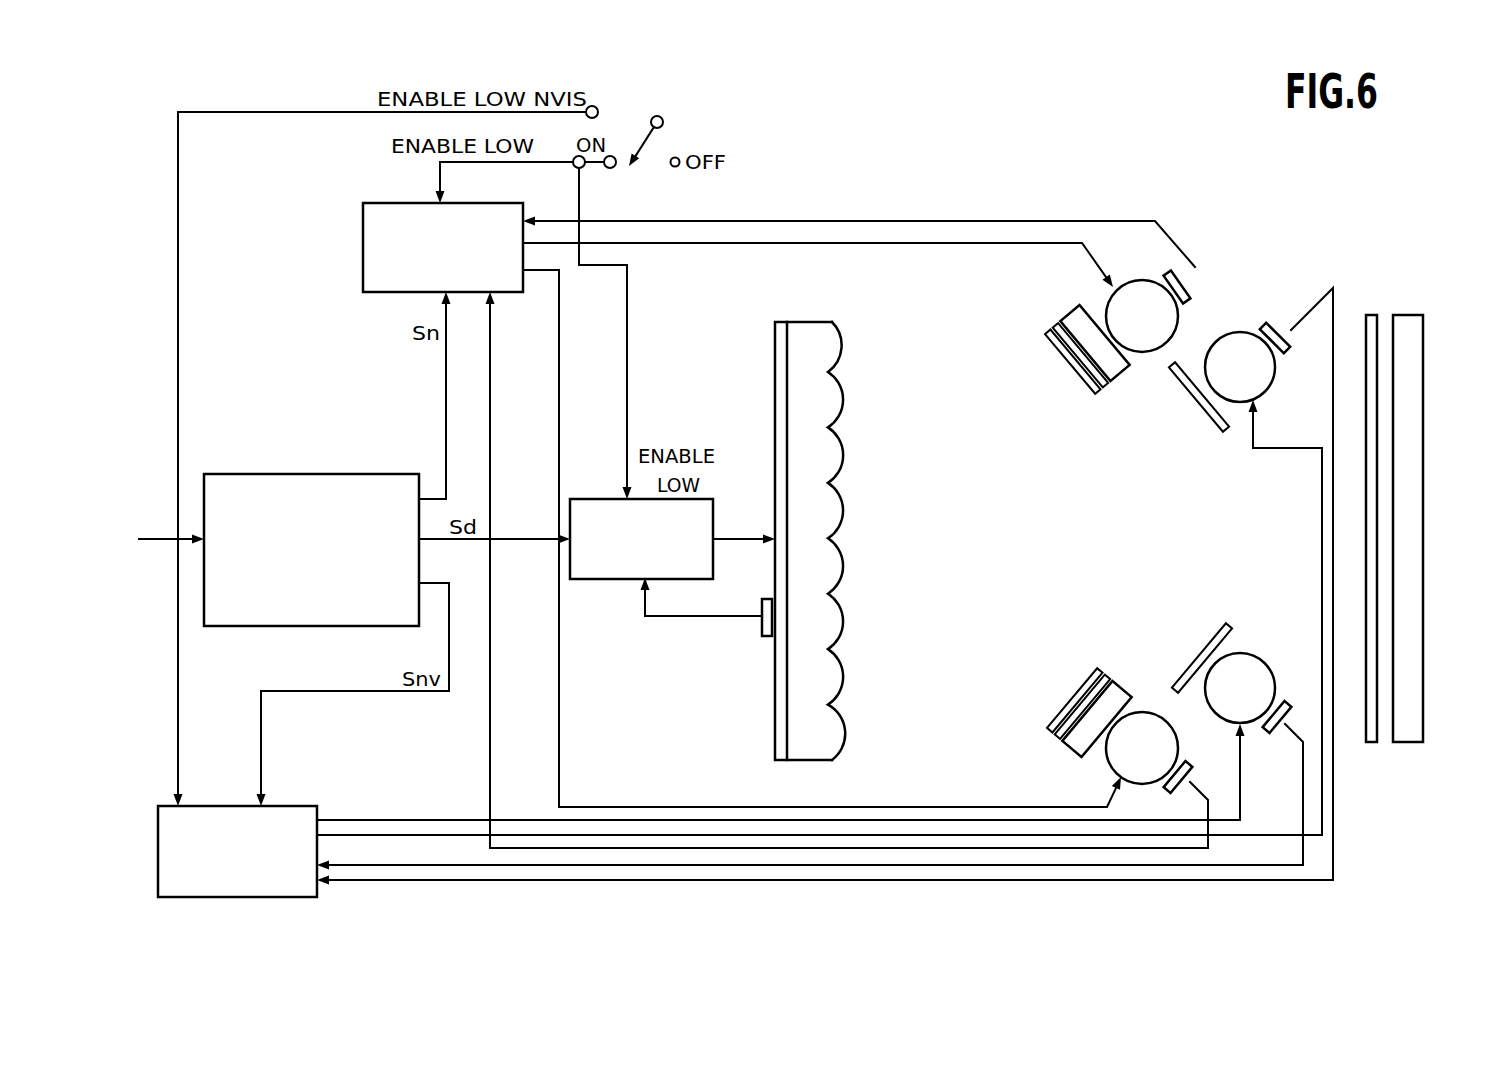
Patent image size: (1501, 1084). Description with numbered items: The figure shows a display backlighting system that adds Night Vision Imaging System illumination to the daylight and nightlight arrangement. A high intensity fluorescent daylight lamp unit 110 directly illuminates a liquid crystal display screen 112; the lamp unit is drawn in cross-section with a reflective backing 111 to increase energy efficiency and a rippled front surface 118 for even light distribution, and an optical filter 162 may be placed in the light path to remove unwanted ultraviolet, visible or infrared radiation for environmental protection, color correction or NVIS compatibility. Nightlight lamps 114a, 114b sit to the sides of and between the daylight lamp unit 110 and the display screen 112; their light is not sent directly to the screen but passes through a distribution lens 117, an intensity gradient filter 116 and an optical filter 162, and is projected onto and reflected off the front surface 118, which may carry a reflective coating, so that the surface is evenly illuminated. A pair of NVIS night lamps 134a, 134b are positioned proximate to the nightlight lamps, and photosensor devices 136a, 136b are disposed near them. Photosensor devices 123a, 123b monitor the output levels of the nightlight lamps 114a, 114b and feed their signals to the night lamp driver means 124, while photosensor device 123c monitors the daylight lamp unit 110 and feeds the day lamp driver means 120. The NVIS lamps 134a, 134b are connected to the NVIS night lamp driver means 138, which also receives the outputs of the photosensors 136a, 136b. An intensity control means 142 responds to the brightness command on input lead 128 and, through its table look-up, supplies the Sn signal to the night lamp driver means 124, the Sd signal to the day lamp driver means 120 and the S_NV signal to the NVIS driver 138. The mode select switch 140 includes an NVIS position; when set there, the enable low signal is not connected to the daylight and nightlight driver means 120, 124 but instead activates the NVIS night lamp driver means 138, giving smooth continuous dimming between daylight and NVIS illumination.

The daylight lamp unit 110 is at (805, 322).
The reflective backing 111 is at (777, 382).
The display screen 112 is at (1405, 315).
The nightlight lamp 114a is at (1109, 303).
The nightlight lamp 114b is at (1112, 772).
The intensity gradient filter 116 is at (1060, 322).
The distribution lens 117 is at (1132, 367).
The front surface 118 is at (845, 406).
The day lamp driver means 120 is at (580, 580).
The photosensor device 123a is at (1189, 292).
The photosensor device 123b is at (1215, 755).
The photosensor device 123c is at (762, 636).
The night lamp driver means 124 is at (363, 247).
The brightness control signal input lead 128 is at (151, 539).
The NVIS night lamp 134a is at (1277, 375).
The NVIS night lamp 134b is at (1240, 652).
The photosensor device 136a is at (1275, 330).
The photosensor device 136b is at (1287, 704).
The NVIS night lamp driver means 138 is at (287, 806).
The switch 140 is at (633, 68).
The intensity control means 142 is at (375, 474).
The optical filter 162 is at (1053, 348).